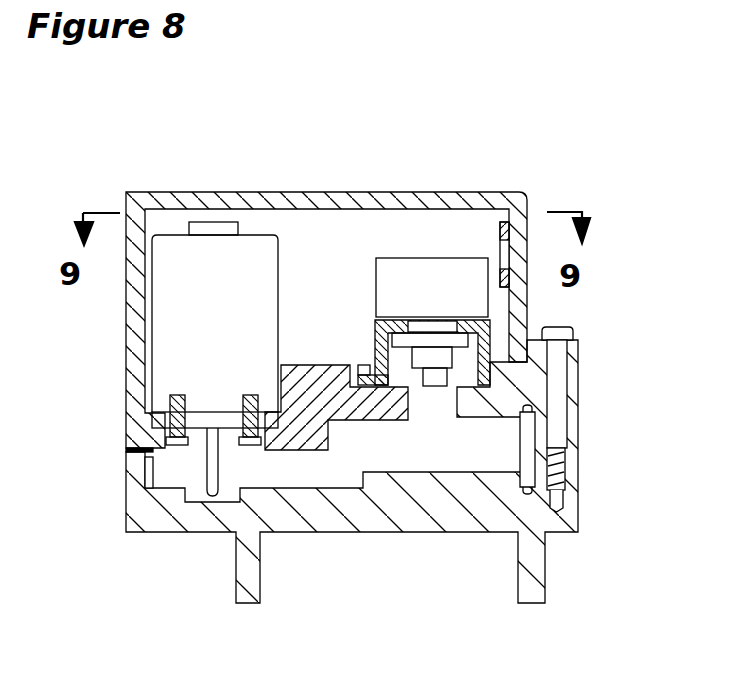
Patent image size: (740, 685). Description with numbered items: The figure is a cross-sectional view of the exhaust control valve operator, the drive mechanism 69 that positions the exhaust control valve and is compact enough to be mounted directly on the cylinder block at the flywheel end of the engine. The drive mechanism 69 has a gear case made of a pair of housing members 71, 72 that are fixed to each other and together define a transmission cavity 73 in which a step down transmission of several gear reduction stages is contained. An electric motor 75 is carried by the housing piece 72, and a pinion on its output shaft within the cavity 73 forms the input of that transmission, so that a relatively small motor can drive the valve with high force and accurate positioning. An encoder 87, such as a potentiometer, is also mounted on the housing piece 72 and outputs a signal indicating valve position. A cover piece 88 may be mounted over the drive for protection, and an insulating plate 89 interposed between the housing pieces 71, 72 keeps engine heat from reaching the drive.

The drive mechanism 69 is at (217, 158).
The housing member 71 is at (128, 505).
The housing member 72 is at (140, 432).
The transmission cavity 73 is at (153, 473).
The electric motor 75 is at (265, 250).
The encoder 87 is at (420, 268).
The cover piece 88 is at (510, 192).
The insulating plate 89 is at (547, 448).